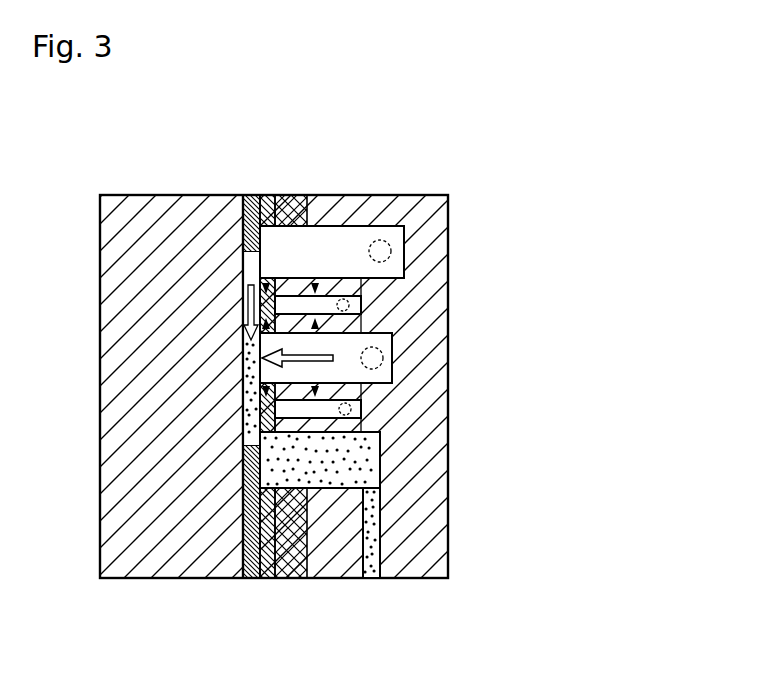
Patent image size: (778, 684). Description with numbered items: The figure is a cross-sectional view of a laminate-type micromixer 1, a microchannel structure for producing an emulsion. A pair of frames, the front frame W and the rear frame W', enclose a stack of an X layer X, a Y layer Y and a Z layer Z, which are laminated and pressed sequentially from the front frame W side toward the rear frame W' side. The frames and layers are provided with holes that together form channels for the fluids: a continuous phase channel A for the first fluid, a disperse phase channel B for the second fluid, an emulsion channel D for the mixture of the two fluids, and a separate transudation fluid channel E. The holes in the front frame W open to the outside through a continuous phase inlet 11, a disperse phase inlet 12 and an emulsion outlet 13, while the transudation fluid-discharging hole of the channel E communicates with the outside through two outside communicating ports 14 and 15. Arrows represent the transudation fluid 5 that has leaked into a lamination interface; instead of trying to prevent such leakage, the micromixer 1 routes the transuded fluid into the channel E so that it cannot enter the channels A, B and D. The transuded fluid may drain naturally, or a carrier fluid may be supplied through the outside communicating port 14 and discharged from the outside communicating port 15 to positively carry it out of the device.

The laminate-type micromixer 1 is at (141, 160).
The transudation fluid 5 is at (268, 290).
The continuous phase inlet 11 is at (392, 250).
The disperse phase inlet 12 is at (384, 357).
The emulsion outlet 13 is at (382, 578).
The outside communicating port 14 is at (365, 410).
The outside communicating port 15 is at (364, 305).
The continuous phase channel A is at (342, 236).
The disperse phase channel B is at (402, 343).
The emulsion channel D is at (385, 458).
The transudation fluid channel E is at (345, 298).
The front frame W is at (387, 386).
The rear frame W' is at (137, 386).
The X layer X is at (300, 578).
The Y layer Y is at (270, 578).
The Z layer Z is at (250, 578).